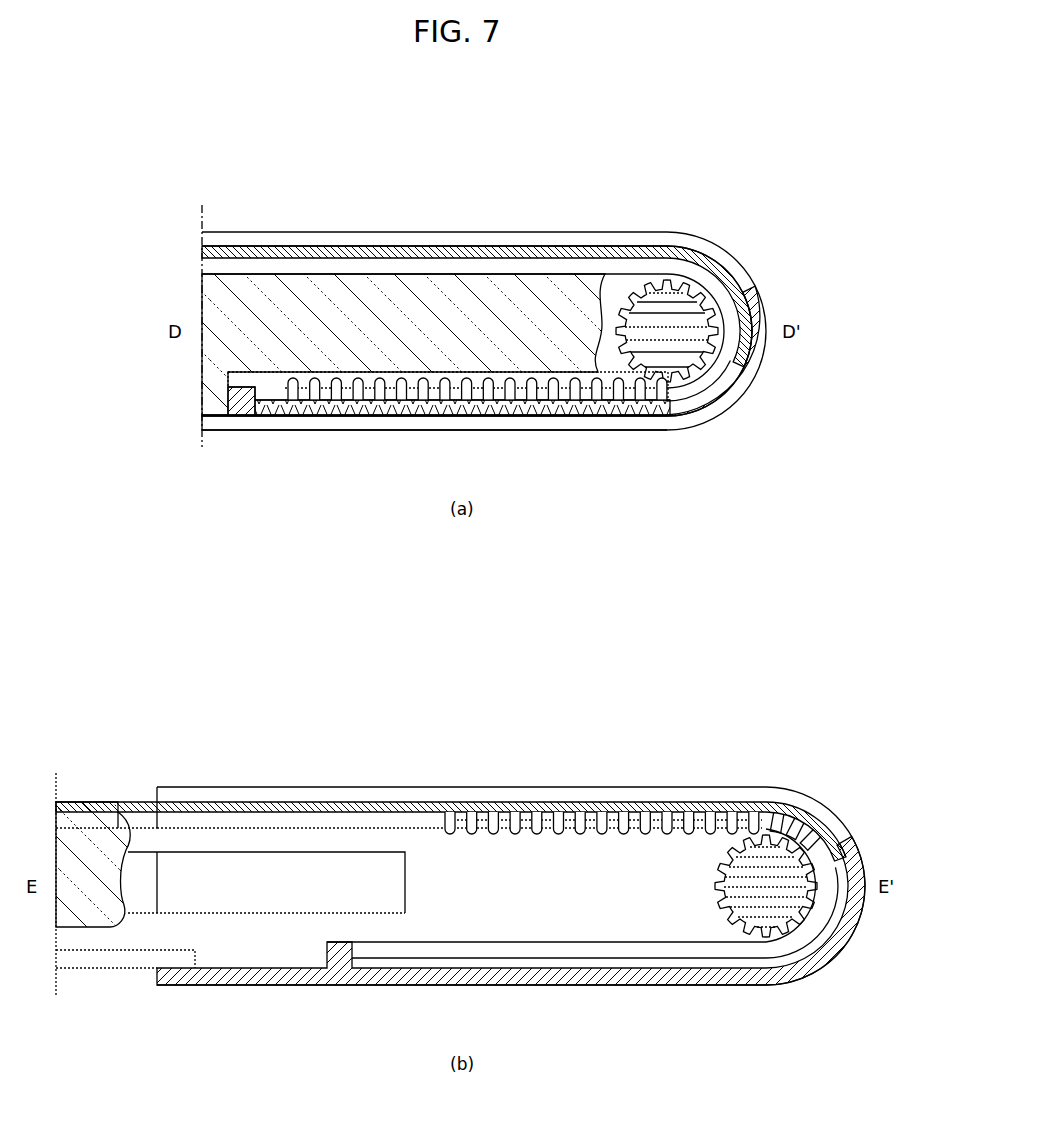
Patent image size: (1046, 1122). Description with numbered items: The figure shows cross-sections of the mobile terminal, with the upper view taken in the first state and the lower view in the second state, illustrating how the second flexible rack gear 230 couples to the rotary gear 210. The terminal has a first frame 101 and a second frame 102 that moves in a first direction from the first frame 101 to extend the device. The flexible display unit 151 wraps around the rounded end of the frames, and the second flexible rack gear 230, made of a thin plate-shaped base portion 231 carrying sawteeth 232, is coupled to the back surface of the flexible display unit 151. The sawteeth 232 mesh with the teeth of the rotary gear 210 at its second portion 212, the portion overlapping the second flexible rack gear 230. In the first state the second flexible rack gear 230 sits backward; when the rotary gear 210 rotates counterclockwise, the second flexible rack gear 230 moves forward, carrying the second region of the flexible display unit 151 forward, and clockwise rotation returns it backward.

The first frame 101 is at (318, 297).
The second frame 102 is at (447, 267).
The flexible display unit 151 is at (565, 255).
The rotary gear 210 is at (757, 860).
The second portion 212 is at (662, 305).
The second flexible rack gear 230 is at (524, 611).
The plate-shaped base portion 231 is at (660, 388).
The sawteeth 232 is at (633, 400).